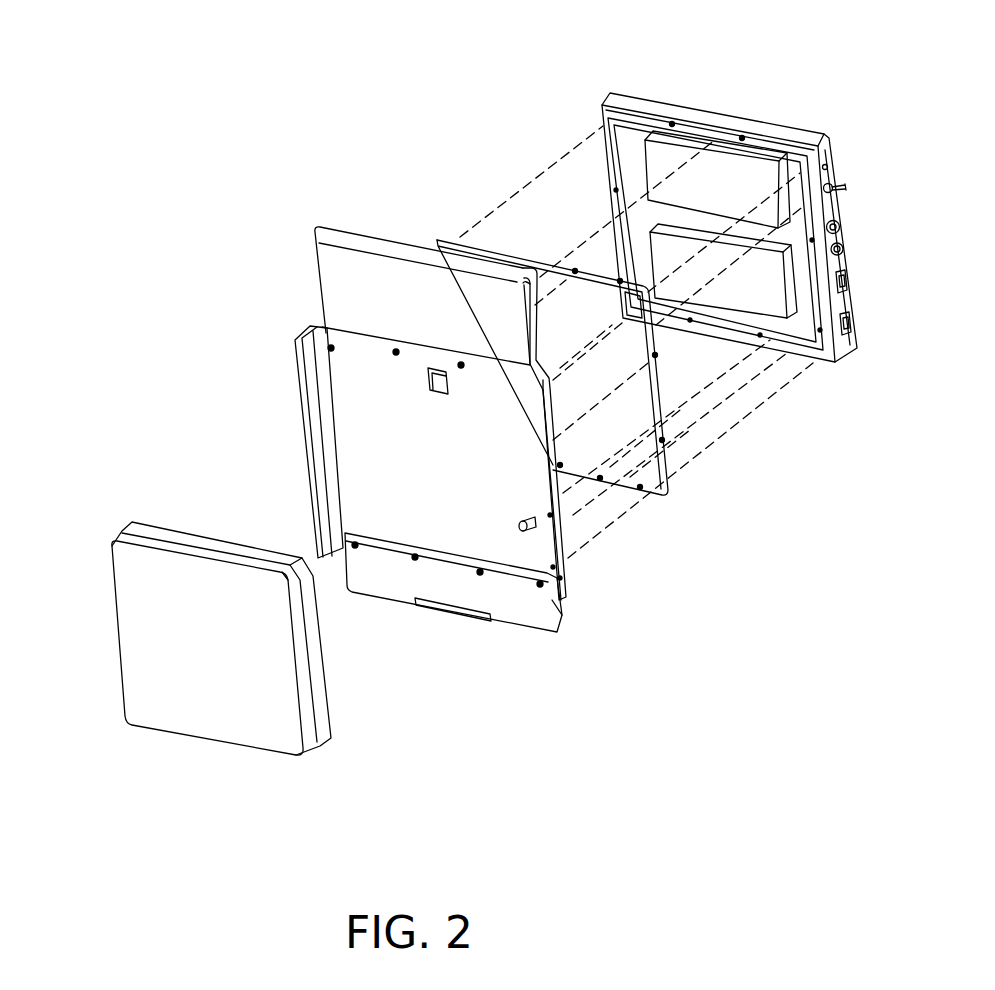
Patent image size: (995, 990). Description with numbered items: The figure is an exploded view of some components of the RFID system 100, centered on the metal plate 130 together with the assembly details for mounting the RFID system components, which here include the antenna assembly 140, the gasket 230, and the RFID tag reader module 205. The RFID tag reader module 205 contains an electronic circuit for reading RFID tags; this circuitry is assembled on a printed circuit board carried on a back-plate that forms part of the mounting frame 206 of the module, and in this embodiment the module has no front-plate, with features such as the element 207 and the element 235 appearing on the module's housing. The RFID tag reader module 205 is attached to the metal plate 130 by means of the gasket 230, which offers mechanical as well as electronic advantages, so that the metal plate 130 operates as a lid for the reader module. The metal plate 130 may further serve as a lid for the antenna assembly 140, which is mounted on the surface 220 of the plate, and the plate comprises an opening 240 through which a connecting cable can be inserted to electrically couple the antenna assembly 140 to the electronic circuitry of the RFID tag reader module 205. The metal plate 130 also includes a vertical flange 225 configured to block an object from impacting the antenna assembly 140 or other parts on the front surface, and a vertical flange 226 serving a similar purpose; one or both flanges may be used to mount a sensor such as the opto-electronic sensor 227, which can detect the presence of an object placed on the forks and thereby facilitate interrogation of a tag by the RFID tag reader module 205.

The sensor device 100 is at (96, 92).
The metal plate 130 is at (287, 236).
The antenna assembly 140 is at (85, 540).
The RFID tag reader module 205 is at (568, 112).
The mounting frame 206 is at (829, 166).
The knob 207 is at (842, 230).
The surface 220 is at (423, 496).
The vertical flange 225 is at (300, 446).
The vertical flange 226 is at (530, 447).
The opto-electronic sensor 227 is at (520, 526).
The gasket 230 is at (492, 238).
The top bar 235 is at (694, 108).
The opening 240 is at (432, 384).